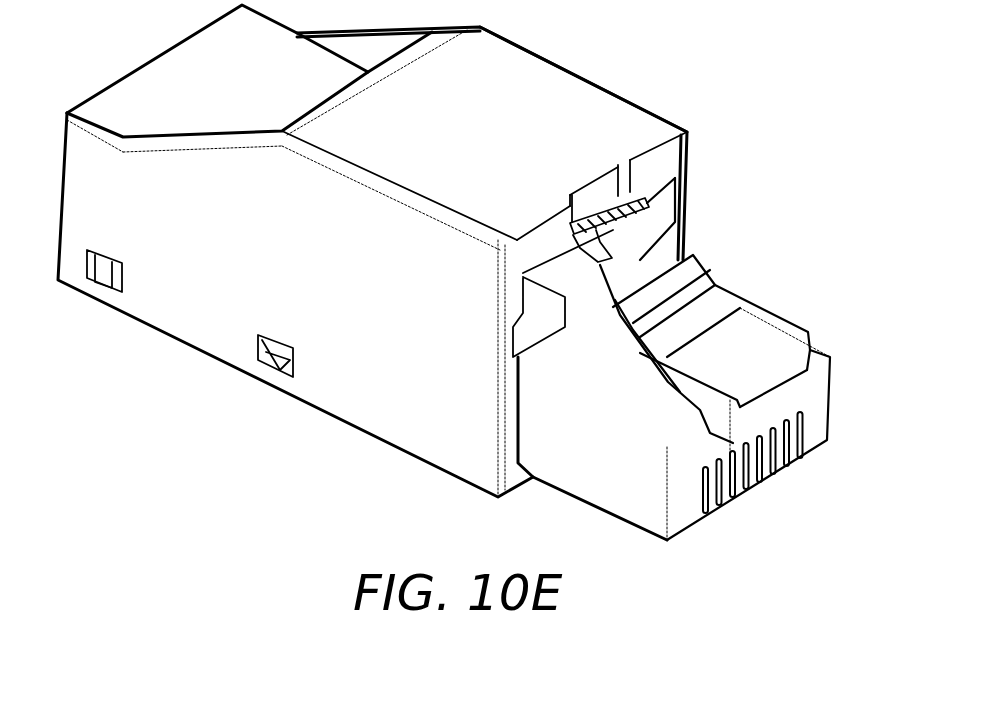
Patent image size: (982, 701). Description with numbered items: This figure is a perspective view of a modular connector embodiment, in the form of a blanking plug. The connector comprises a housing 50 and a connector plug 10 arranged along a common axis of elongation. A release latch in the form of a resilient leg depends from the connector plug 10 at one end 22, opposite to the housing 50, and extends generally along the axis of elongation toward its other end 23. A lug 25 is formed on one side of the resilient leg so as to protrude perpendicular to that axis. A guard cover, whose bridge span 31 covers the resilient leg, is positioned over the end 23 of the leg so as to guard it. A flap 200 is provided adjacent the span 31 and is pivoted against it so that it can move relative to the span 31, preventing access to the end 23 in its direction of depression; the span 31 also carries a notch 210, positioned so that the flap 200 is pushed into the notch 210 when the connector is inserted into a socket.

The connector plug 10 is at (763, 487).
The end of the resilient leg 22 is at (757, 327).
The end of the resilient leg 23 is at (642, 260).
The lug 25 is at (690, 263).
The span 31 is at (558, 85).
The housing 50 is at (388, 392).
The flap 200 is at (600, 250).
The notch 210 is at (600, 190).